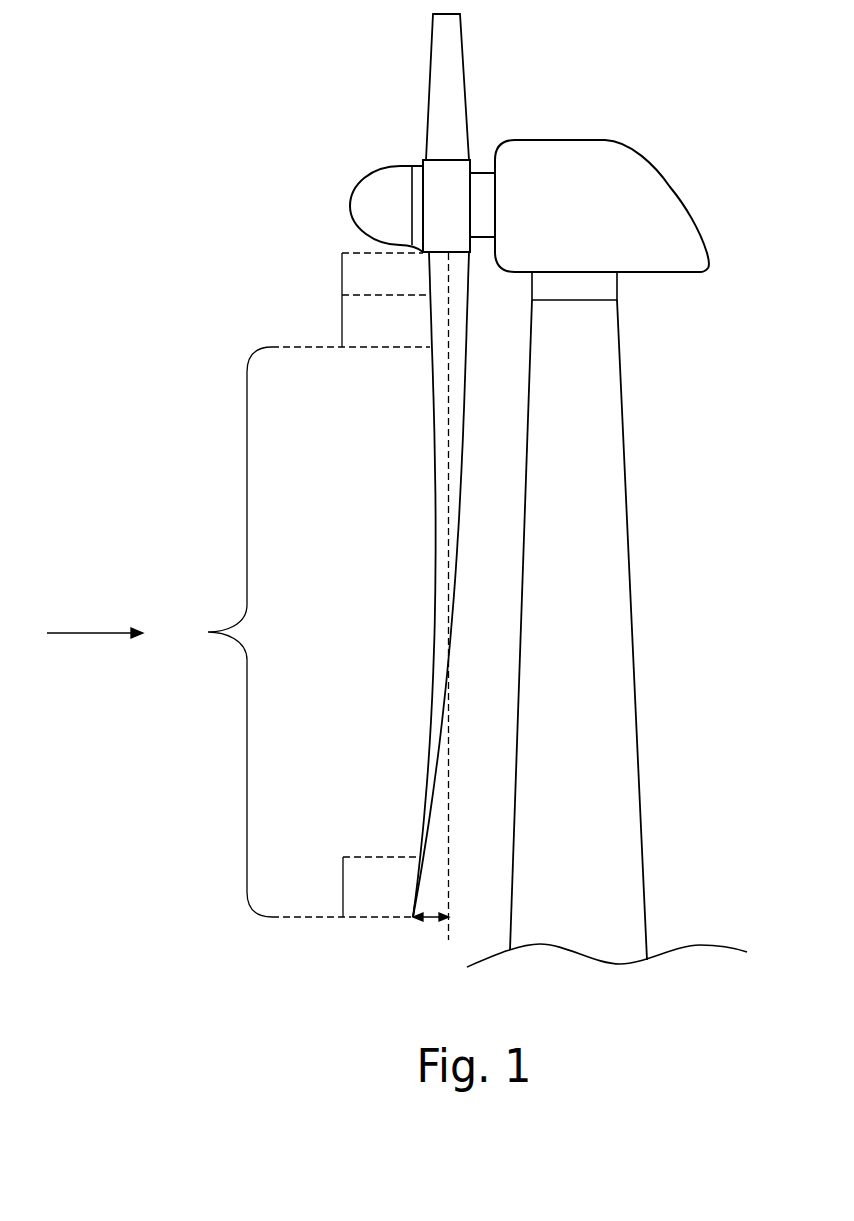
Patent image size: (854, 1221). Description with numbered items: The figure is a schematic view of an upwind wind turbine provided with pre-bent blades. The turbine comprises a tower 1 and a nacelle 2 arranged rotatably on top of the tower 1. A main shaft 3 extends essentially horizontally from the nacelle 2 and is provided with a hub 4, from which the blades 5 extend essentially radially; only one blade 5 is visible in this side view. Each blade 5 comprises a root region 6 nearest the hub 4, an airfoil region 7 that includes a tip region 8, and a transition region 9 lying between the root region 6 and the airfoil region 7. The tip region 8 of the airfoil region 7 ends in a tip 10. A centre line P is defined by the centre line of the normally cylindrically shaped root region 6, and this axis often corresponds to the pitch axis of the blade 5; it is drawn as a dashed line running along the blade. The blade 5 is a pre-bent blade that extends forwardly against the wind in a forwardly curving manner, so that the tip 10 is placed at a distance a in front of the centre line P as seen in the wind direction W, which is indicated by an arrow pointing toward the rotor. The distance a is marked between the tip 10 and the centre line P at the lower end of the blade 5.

The tower 1 is at (628, 535).
The nacelle 2 is at (643, 167).
The rotor shaft 3 is at (482, 190).
The hub 4 is at (438, 177).
The blade 5 is at (432, 706).
The root region 6 is at (342, 275).
The airfoil region 7 is at (208, 632).
The tip region 8 is at (343, 888).
The transition region 9 is at (342, 323).
The tip 10 is at (412, 920).
The centre line p is at (449, 738).
The distance a is at (433, 922).
The wind direction w is at (95, 622).